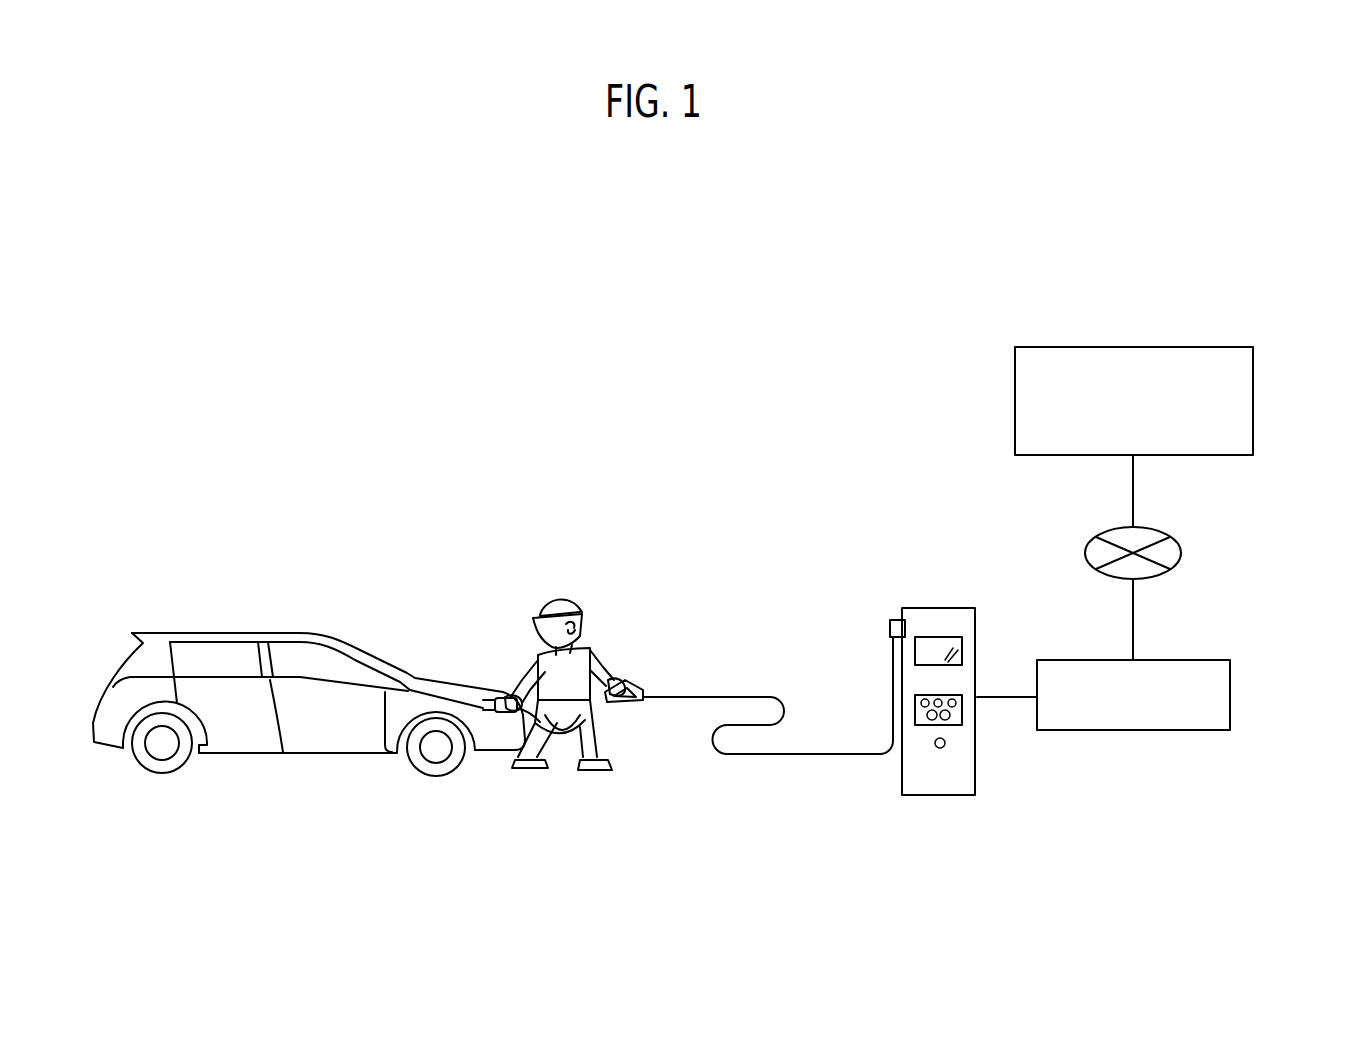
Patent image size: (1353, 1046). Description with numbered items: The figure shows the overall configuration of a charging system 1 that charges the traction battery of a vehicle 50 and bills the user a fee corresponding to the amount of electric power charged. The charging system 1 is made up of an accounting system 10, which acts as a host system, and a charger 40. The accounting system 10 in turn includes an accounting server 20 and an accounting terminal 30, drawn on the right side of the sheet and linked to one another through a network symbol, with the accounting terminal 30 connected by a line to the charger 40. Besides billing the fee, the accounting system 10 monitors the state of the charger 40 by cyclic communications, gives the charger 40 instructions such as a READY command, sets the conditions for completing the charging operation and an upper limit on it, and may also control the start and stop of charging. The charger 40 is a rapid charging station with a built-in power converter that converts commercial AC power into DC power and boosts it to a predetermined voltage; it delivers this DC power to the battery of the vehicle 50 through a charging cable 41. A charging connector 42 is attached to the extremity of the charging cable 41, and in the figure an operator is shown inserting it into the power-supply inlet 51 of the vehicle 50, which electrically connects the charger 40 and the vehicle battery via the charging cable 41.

The charging system 1 is at (1219, 287).
The accounting system 10 is at (1238, 521).
The accounting server 20 is at (1255, 397).
The accounting terminal 30 is at (1232, 695).
The charger 40 is at (938, 618).
The charging cable 41 is at (730, 692).
The charging connector 42 is at (510, 693).
The vehicle 50 is at (253, 633).
The power-supply inlet 51 is at (492, 697).